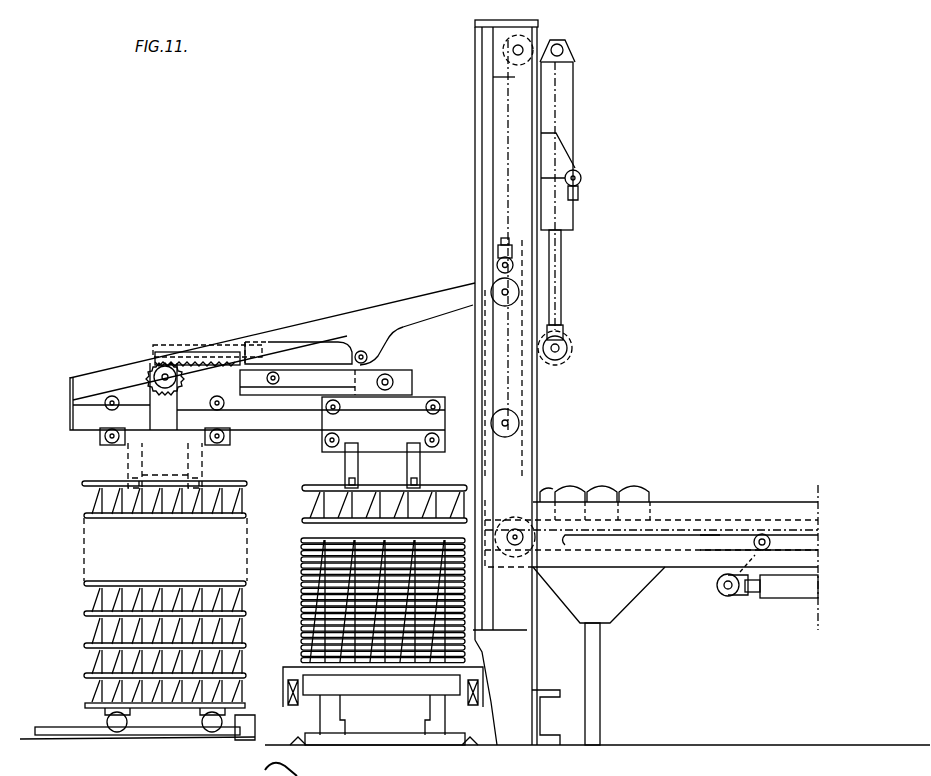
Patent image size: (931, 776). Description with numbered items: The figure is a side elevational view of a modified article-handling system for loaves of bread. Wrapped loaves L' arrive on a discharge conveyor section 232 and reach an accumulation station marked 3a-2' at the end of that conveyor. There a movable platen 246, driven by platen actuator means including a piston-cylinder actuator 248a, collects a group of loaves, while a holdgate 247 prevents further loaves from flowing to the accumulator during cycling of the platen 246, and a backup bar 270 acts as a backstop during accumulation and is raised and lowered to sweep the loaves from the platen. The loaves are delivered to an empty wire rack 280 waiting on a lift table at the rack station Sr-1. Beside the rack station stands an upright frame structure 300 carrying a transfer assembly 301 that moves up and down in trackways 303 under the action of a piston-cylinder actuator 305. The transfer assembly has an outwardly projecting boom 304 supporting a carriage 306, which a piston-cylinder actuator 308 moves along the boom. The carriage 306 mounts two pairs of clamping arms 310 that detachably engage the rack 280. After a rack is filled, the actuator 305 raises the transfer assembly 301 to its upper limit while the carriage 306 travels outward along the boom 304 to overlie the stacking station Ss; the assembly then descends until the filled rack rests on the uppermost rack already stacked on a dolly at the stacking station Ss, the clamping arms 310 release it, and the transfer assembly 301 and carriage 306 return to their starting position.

The upright frame structure 300 is at (475, 207).
The transfer assembly 301 is at (372, 310).
The trackways 303 is at (512, 398).
The boom 304 is at (461, 415).
The piston-cylinder actuator 305 is at (572, 126).
The carriage 306 is at (322, 404).
The piston-cylinder actuator 308 is at (303, 352).
The clamping arms 310 is at (437, 463).
The backup bar 270 is at (478, 494).
The wire rack 280 is at (85, 497).
The holdgate 247 is at (650, 500).
The discharge conveyor section 232 is at (762, 520).
The movable platen 246 is at (673, 520).
The piston-cylinder actuator 248a is at (805, 594).
The stacking station Ss is at (82, 484).
The rack station Sr-1 is at (302, 537).
The loaves L' is at (338, 506).
The articles 3a-2' is at (622, 468).